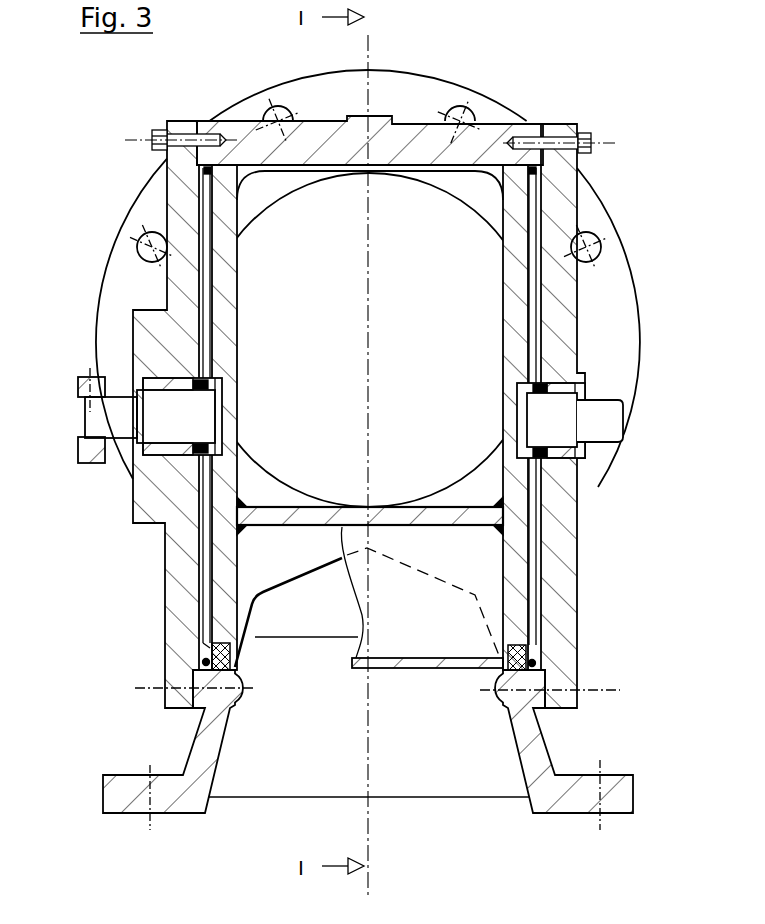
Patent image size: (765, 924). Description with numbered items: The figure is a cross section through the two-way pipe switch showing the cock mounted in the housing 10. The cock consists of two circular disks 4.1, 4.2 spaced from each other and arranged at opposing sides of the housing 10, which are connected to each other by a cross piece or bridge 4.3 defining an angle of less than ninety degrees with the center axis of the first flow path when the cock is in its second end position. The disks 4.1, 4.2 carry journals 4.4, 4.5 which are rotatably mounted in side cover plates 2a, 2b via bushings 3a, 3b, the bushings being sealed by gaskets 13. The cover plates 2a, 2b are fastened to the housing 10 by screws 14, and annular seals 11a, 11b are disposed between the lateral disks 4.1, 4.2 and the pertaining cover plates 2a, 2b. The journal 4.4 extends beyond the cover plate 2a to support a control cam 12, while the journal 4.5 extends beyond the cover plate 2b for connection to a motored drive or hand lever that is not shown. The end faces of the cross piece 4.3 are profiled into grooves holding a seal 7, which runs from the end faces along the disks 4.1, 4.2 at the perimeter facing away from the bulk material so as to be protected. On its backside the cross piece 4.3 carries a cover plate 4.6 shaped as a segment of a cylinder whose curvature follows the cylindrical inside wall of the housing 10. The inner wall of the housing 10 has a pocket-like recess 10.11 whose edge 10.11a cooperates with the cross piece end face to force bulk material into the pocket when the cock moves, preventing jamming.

The side cover plate 2a is at (178, 202).
The side cover plate 2b is at (572, 200).
The bushing 3a is at (187, 384).
The bushing 3b is at (578, 374).
The circular disk 4.1 is at (221, 576).
The circular disk 4.2 is at (515, 535).
The cross piece 4.3 is at (388, 507).
The journal 4.4 is at (157, 403).
The journal 4.5 is at (563, 435).
The cover plate 4.6 is at (432, 668).
The seal 7 is at (212, 644).
The housing 10 is at (553, 743).
The pocket-like recess 10.11 is at (293, 615).
The edge of the pocket 10.11a is at (273, 580).
The annular seal 11a is at (203, 657).
The annular seal 11b is at (538, 658).
The control cam 12 is at (85, 457).
The gasket 13 is at (538, 384).
The screw 14 is at (578, 126).